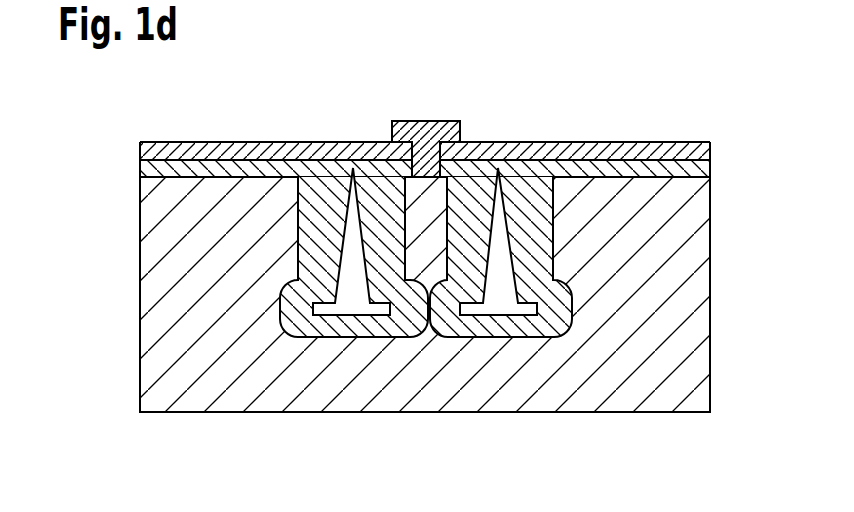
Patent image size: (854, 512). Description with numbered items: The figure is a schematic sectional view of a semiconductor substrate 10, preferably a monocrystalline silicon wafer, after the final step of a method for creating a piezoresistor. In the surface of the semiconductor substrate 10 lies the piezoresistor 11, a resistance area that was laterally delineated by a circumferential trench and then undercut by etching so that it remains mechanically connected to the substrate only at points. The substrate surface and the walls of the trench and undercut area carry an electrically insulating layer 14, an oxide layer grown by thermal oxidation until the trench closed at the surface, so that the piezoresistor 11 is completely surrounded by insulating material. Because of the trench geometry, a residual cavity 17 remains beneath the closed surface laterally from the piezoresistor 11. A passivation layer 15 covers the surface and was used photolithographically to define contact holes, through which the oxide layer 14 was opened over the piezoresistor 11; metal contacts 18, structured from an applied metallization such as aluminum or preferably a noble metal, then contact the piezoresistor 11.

The semiconductor substrate 10 is at (157, 316).
The resistance area 11 is at (427, 205).
The electrically insulating layer 14 is at (535, 188).
The passivation layer 15 is at (593, 150).
The residual cavity 17 is at (500, 305).
The metal contacts 18 is at (440, 168).